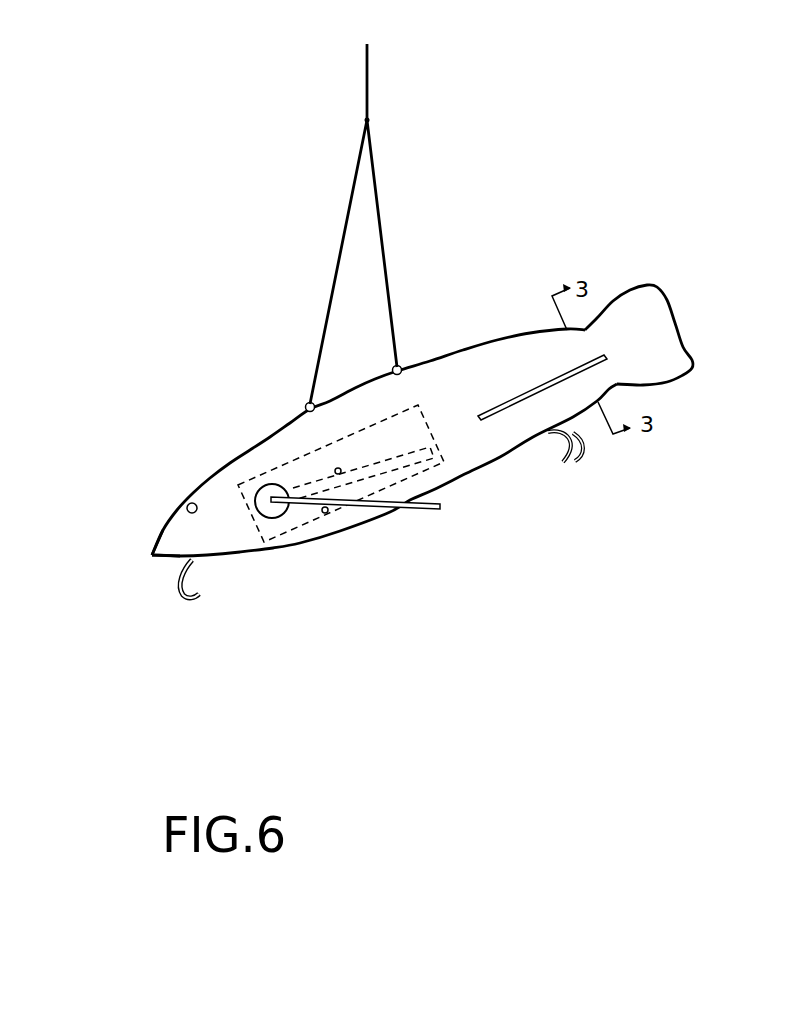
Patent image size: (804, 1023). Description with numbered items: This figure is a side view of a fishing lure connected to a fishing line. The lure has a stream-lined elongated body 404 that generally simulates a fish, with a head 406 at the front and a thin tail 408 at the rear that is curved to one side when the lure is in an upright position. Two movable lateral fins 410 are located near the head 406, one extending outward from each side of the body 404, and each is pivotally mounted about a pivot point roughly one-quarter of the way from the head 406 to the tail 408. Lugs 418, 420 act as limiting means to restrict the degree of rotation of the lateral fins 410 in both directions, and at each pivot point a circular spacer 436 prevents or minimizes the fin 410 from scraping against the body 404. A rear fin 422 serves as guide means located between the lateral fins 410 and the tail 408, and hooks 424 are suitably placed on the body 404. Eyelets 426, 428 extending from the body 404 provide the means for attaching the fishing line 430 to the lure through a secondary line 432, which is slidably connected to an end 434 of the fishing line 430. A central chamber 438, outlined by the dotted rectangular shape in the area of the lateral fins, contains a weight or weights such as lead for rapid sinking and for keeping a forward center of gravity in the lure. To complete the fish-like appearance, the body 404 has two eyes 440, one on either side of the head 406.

The body 404 is at (215, 497).
The head 406 is at (180, 530).
The tail 408 is at (648, 312).
The lateral fin 410 is at (397, 509).
The lug 418 is at (325, 513).
The lug 420 is at (338, 468).
The rear fin 422 is at (505, 402).
The hook 424 is at (175, 585).
The eyelet 426 is at (306, 404).
The eyelet 428 is at (400, 367).
The fishing line 430 is at (368, 73).
The secondary line 432 is at (380, 227).
The end of the fishing line 434 is at (368, 120).
The circular spacer 436 is at (255, 508).
The central chamber 438 is at (260, 540).
The eye 440 is at (186, 504).